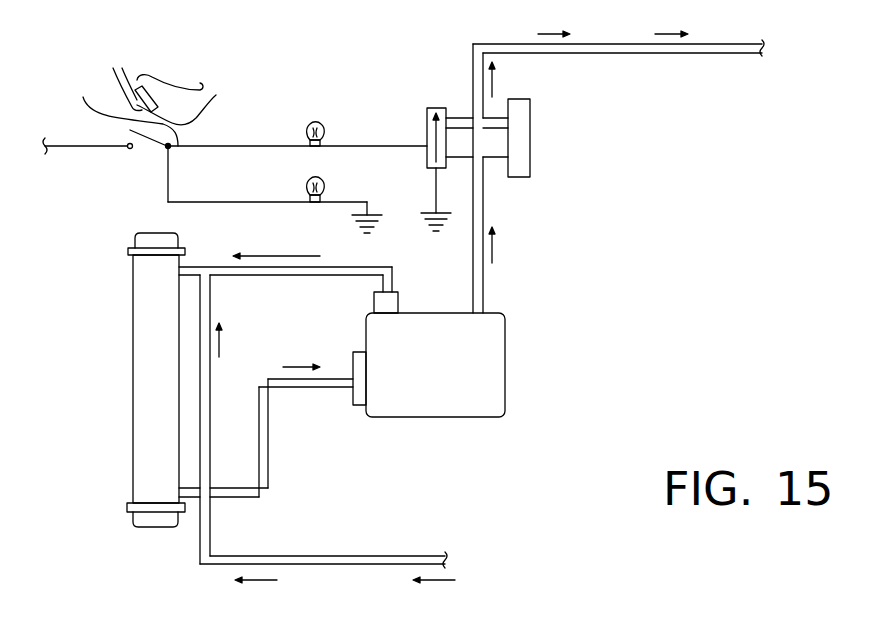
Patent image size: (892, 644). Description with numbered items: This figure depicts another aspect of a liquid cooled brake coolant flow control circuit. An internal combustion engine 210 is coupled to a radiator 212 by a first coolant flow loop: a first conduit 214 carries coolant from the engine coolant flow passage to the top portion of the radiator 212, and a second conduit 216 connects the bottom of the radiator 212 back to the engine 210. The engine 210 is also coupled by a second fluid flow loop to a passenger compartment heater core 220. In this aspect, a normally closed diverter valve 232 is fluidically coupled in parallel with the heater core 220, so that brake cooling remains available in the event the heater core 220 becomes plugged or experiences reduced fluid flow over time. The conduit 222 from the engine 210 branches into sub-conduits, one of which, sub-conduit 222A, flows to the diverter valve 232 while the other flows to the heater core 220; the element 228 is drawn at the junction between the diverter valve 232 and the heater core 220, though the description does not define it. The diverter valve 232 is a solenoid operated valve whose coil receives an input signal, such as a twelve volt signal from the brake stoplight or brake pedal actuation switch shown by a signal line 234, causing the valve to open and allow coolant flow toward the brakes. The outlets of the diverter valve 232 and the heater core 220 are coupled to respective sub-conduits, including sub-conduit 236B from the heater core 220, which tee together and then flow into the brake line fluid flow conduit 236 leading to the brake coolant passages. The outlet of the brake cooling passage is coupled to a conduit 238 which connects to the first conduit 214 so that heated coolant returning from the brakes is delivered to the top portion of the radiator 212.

The internal combustion engine 210 is at (430, 418).
The radiator 212 is at (150, 310).
The first conduit 214 is at (345, 266).
The second conduit 216 is at (228, 498).
The passenger compartment heater core 220 is at (530, 157).
The first heater conduit 222 is at (483, 212).
The sub-conduit 222A is at (460, 157).
The valve actuator bar 228 is at (493, 158).
The diverter valve 232 is at (427, 128).
The signal line 234 is at (129, 111).
The brake line fluid flow conduit 236 is at (645, 53).
The sub-conduit 236B is at (497, 112).
The conduit 238 is at (305, 565).